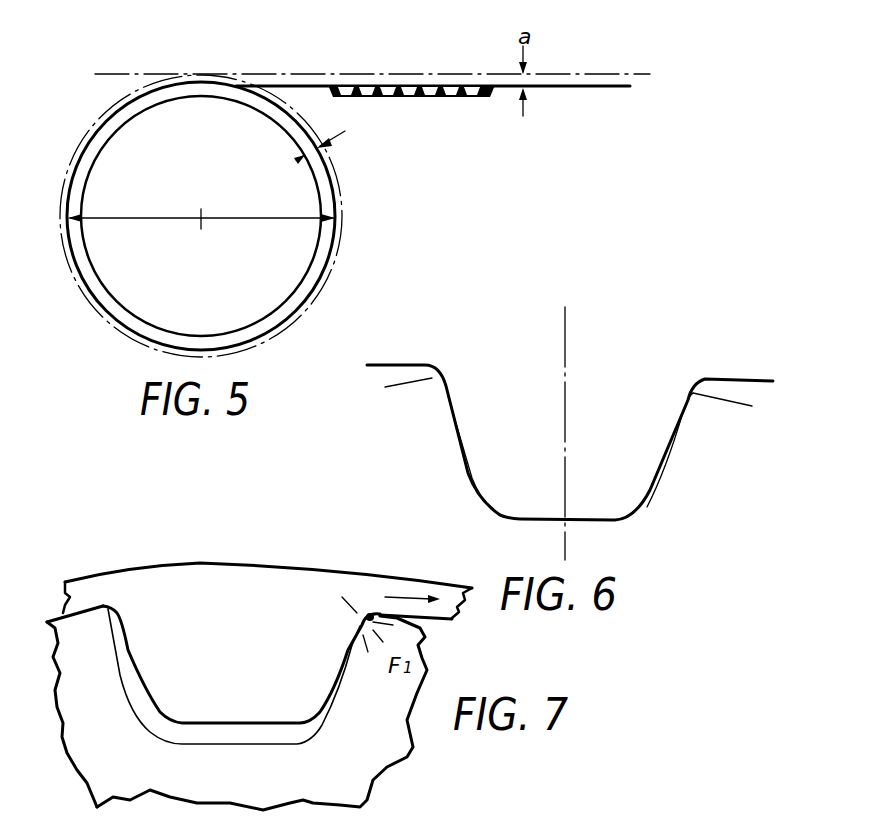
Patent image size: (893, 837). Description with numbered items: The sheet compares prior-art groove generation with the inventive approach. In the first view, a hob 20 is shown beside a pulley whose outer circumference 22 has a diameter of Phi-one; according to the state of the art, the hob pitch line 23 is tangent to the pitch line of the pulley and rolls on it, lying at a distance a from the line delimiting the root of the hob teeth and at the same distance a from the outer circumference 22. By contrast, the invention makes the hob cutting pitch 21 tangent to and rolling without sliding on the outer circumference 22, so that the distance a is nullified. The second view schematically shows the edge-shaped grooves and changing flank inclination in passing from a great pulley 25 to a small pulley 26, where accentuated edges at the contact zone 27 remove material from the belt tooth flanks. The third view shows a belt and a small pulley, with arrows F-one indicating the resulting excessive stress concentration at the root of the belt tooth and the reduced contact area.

In FIG. 5, the hob 20 is at (419, 54).
In FIG. 5, the cutting pitch 21 is at (558, 89).
In FIG. 5, the outer circumference 22 is at (333, 188).
In FIG. 5, the pitch line 23 is at (292, 73).
In FIG. 6, the great pulley 25 is at (727, 378).
In FIG. 6, the small pulley 26 is at (680, 455).
In FIG. 6, the contact zone 27 is at (693, 399).